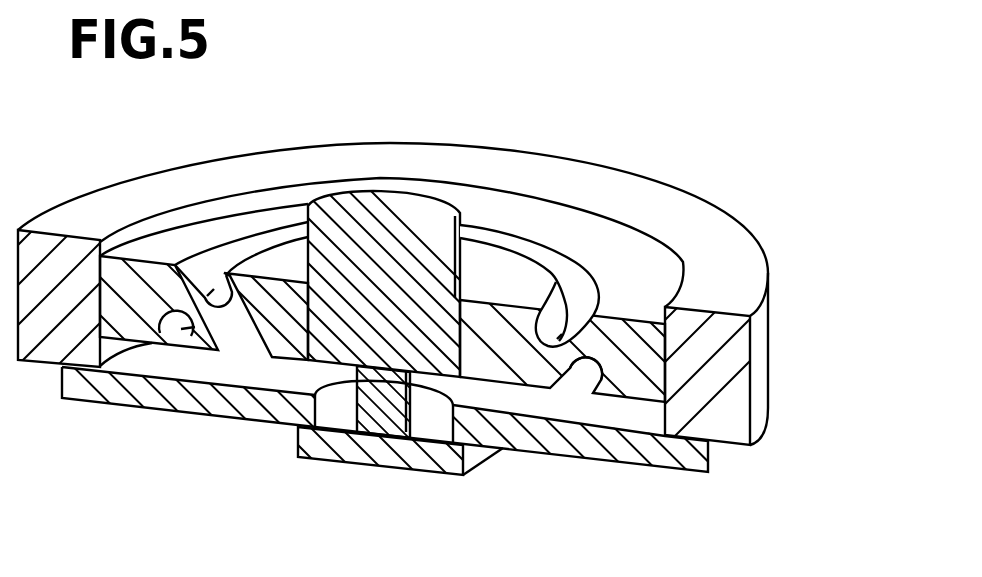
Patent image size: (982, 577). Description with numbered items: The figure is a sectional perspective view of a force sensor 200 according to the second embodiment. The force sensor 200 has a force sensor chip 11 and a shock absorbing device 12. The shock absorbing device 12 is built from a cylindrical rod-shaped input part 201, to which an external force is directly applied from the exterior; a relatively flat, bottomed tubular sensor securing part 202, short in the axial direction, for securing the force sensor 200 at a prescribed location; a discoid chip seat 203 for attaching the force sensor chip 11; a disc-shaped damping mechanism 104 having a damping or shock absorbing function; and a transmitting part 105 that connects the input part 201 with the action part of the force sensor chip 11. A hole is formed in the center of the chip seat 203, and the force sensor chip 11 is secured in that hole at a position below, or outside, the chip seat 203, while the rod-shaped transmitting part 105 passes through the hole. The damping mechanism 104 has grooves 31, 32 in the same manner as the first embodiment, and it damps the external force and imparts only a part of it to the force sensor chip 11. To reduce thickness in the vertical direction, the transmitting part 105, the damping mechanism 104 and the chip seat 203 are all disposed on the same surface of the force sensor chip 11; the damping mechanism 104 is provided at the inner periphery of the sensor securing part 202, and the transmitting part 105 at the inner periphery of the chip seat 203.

The force sensor 200 is at (718, 206).
The input part 201 is at (360, 197).
The sensor securing part 202 is at (757, 354).
The chip seat 203 is at (618, 453).
The damping mechanism 104 is at (182, 237).
The transmitting part 105 is at (378, 410).
The groove 31 is at (562, 242).
The groove 32 is at (181, 330).
The shock absorbing device 12 is at (629, 257).
The force sensor chip 11 is at (426, 470).